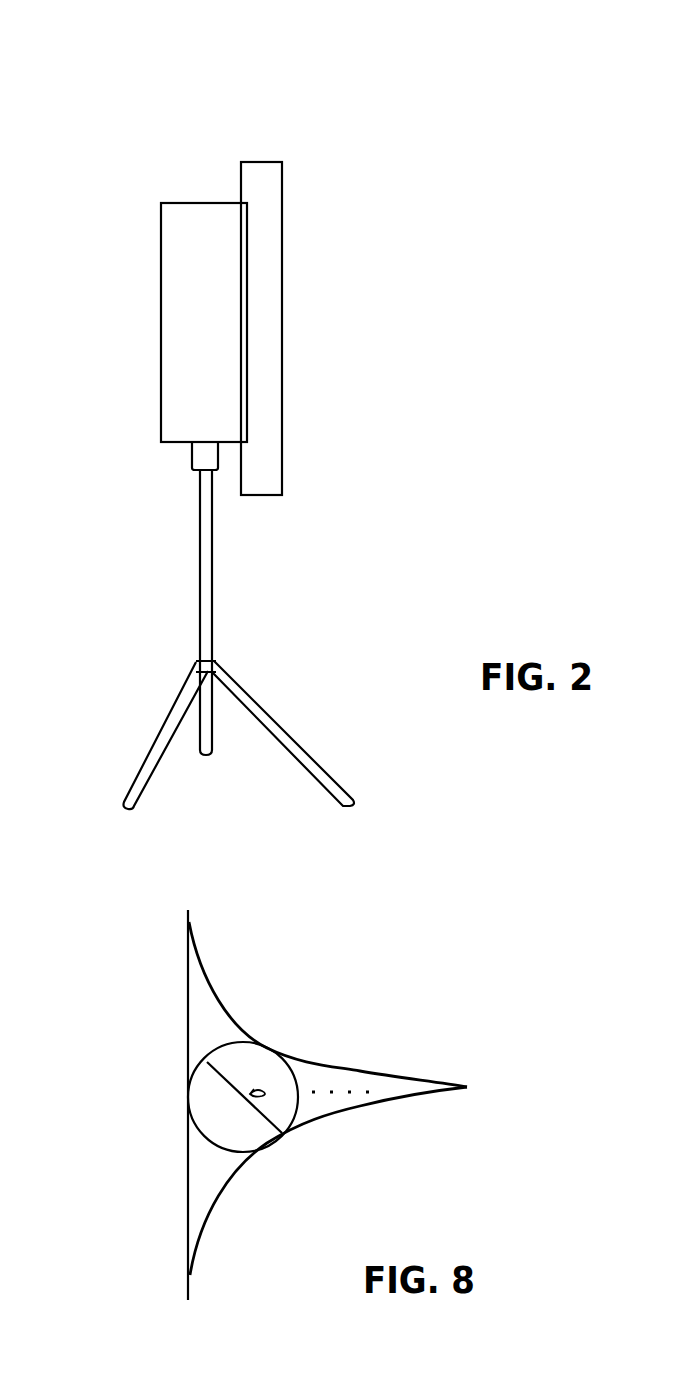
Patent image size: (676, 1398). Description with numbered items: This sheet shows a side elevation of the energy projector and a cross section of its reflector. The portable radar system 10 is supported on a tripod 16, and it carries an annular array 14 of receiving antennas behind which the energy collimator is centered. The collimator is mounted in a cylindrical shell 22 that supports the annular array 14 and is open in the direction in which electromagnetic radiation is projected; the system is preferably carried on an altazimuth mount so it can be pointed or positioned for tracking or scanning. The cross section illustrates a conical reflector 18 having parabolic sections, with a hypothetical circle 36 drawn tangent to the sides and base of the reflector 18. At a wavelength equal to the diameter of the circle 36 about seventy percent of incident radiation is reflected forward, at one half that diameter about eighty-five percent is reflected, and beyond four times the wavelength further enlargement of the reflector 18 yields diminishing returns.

In FIG. 2, the portable radar system 10 is at (427, 80).
In FIG. 2, the annular array of receiving antennas 14 is at (267, 495).
In FIG. 2, the tripod 16 is at (203, 557).
In FIG. 2, the cylindrical shell 22 is at (158, 228).
In FIG. 8, the conical reflector 18 is at (233, 1187).
In FIG. 8, the hypothetical circle 36 is at (267, 1048).